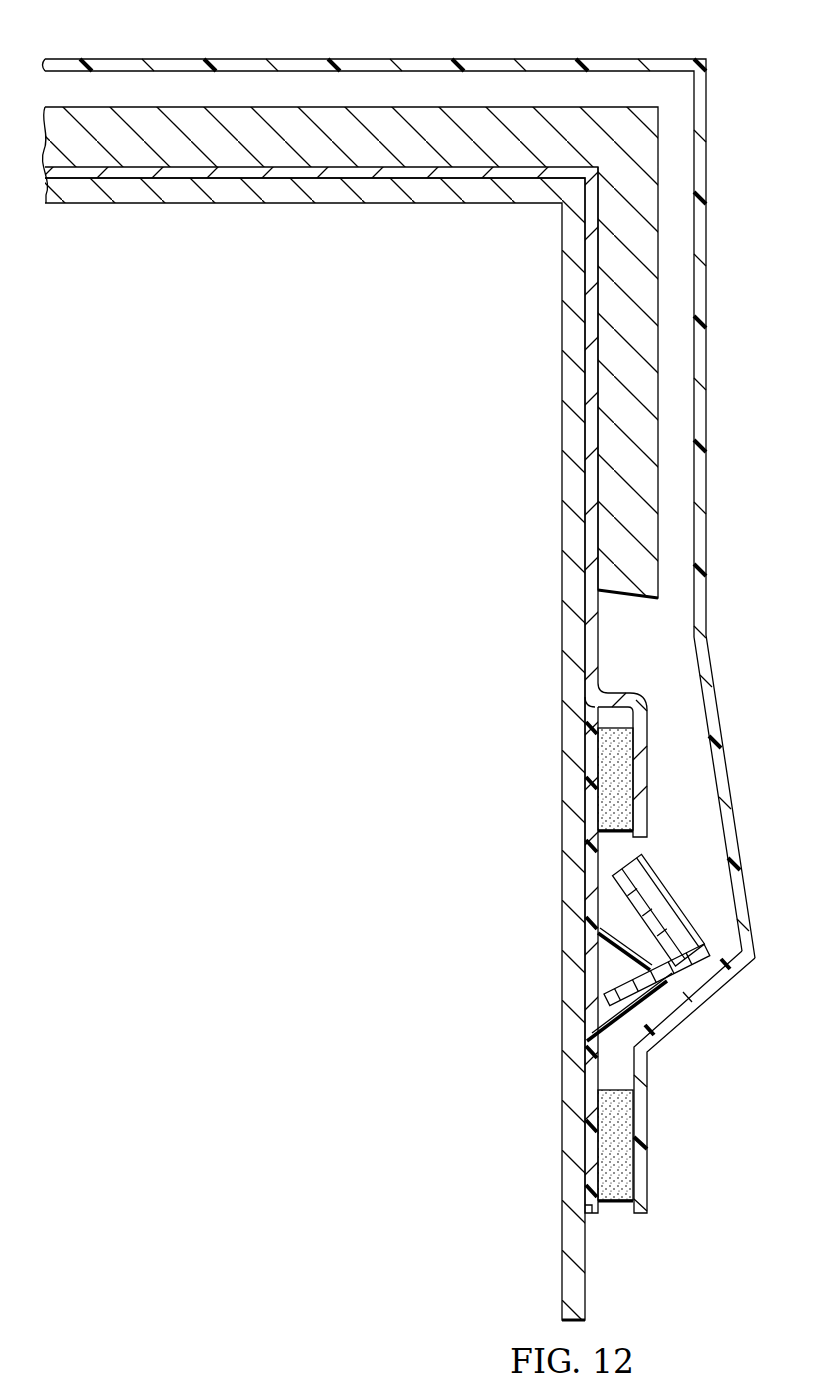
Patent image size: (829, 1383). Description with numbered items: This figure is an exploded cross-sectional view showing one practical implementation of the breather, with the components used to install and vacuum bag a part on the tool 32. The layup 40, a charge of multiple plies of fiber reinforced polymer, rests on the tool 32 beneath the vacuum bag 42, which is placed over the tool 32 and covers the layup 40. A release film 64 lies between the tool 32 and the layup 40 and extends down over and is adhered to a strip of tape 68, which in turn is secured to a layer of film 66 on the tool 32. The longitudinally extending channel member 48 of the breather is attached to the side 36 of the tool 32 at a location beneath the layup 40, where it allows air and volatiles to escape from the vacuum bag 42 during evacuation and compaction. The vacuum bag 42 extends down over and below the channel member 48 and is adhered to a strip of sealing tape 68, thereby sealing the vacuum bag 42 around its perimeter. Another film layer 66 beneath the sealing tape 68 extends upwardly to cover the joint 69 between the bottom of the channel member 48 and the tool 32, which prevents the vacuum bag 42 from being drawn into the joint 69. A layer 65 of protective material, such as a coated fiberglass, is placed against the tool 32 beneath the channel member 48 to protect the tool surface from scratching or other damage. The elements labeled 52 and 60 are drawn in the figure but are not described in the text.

The tool 32 is at (560, 432).
The side 36 is at (588, 1270).
The layup 40 is at (648, 165).
The vacuum bag 42 is at (359, 62).
The channel member 48 is at (673, 917).
The bracket 52 is at (620, 856).
The plate 60 is at (594, 876).
The release film 64 is at (627, 703).
The layer of protective material 65 is at (597, 930).
The film layer 66 is at (592, 775).
The sealing tape 68 is at (624, 762).
The joint 69 is at (580, 1005).